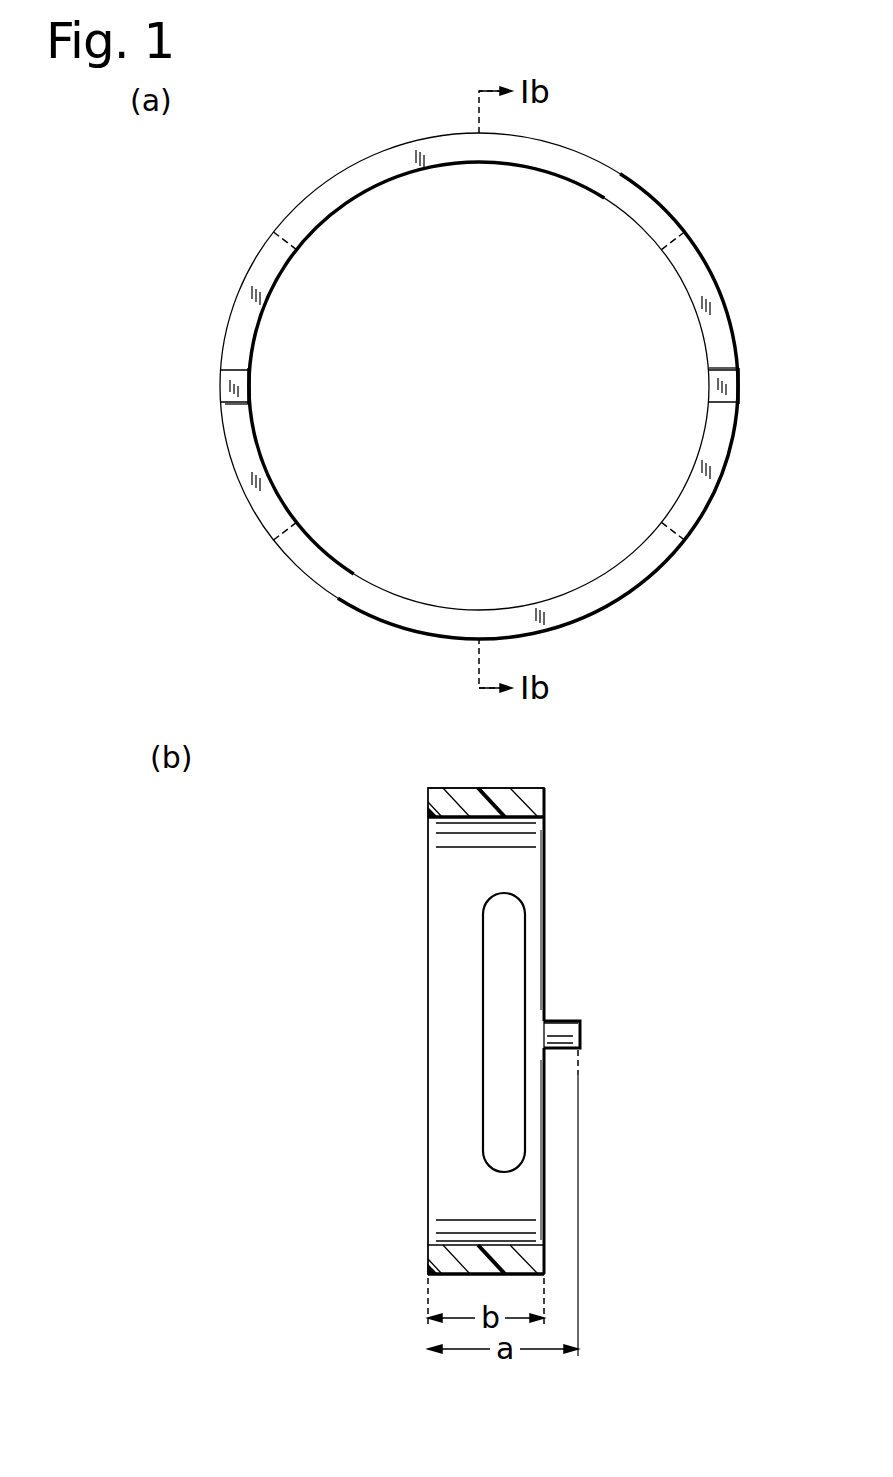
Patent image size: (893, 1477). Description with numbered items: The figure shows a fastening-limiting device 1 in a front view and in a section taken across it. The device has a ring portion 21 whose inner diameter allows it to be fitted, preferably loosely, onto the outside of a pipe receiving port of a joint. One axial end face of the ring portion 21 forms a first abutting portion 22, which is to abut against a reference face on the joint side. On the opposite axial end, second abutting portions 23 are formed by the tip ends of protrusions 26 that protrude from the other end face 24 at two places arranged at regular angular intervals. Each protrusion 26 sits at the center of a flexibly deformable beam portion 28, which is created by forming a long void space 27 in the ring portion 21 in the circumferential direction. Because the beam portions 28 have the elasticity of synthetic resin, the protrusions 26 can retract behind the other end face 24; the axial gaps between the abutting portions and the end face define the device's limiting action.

The fastening-limiting device 1 is at (332, 172).
The ring portion 21 is at (614, 172).
The first abutting portion 22 is at (428, 800).
The second abutting portion 23 is at (222, 386).
The other end face 24 is at (546, 800).
The protrusion 26 is at (232, 410).
The long void space 27 is at (512, 917).
The beam portion 28 is at (228, 330).